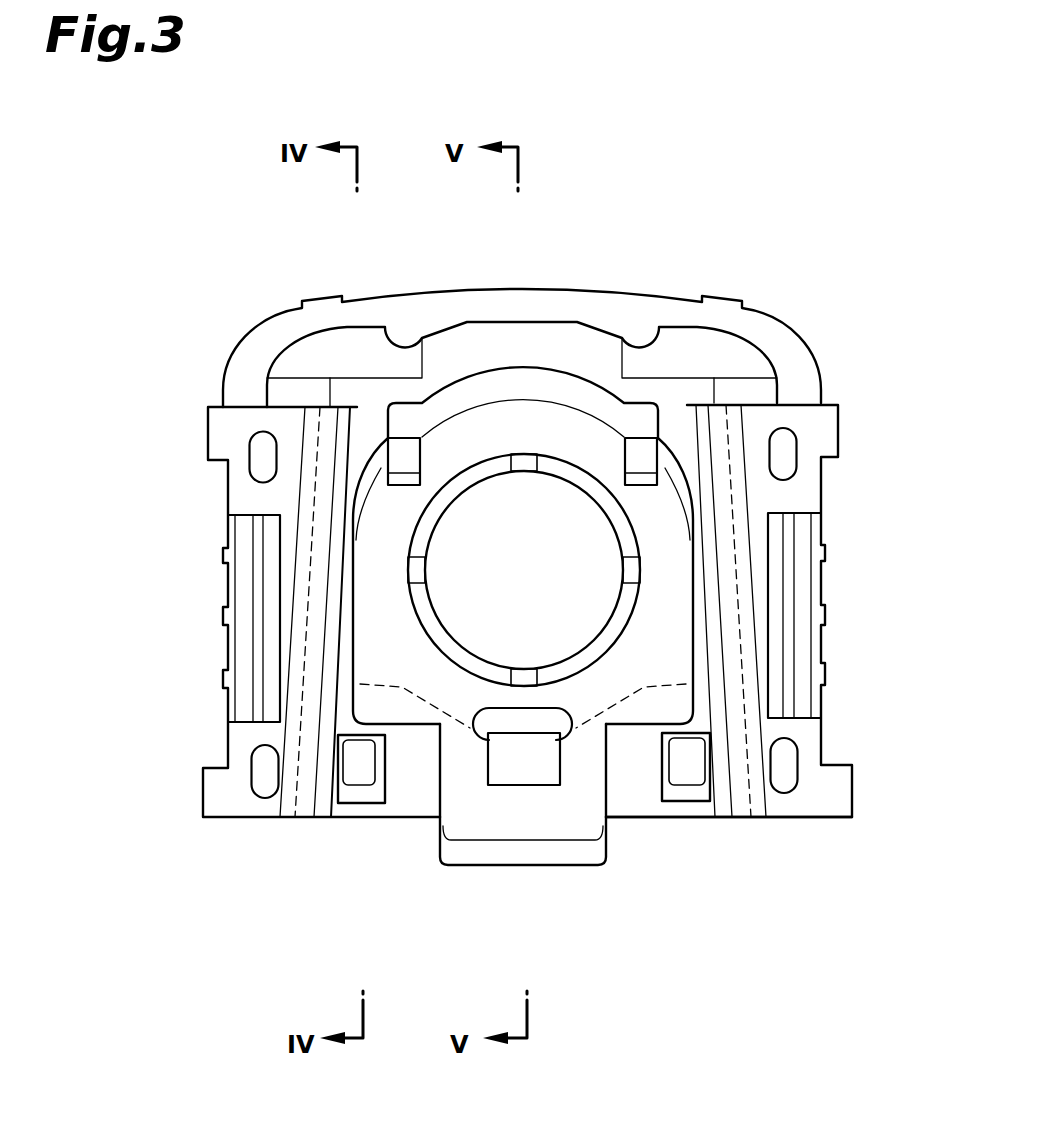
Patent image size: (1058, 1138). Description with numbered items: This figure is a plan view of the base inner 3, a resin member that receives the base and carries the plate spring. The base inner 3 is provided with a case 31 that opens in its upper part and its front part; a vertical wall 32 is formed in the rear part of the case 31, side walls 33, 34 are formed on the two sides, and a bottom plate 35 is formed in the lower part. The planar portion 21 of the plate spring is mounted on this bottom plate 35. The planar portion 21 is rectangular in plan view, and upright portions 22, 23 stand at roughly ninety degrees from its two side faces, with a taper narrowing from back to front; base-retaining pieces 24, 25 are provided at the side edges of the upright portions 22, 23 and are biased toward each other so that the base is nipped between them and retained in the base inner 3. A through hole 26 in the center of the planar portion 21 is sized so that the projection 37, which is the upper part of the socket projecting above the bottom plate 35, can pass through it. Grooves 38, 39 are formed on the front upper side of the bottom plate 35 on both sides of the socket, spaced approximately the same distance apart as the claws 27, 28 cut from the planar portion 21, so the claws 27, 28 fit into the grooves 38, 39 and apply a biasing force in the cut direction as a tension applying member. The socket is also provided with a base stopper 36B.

The base inner 3 is at (757, 260).
The planar portion 21 is at (628, 792).
The upright portion 22 is at (318, 568).
The upright portion 23 is at (729, 565).
The base-retaining piece 24 is at (348, 416).
The base-retaining piece 25 is at (694, 416).
The through hole 26 is at (472, 738).
The claw 27 is at (364, 775).
The claw 28 is at (688, 775).
The case 31 is at (832, 375).
The vertical wall 32 is at (519, 306).
The side wall 33 is at (288, 622).
The side wall 34 is at (760, 641).
The bottom plate 35 is at (661, 808).
The base stopper 36B is at (557, 856).
The projection 37 is at (507, 417).
The groove 38 is at (372, 795).
The groove 39 is at (735, 823).